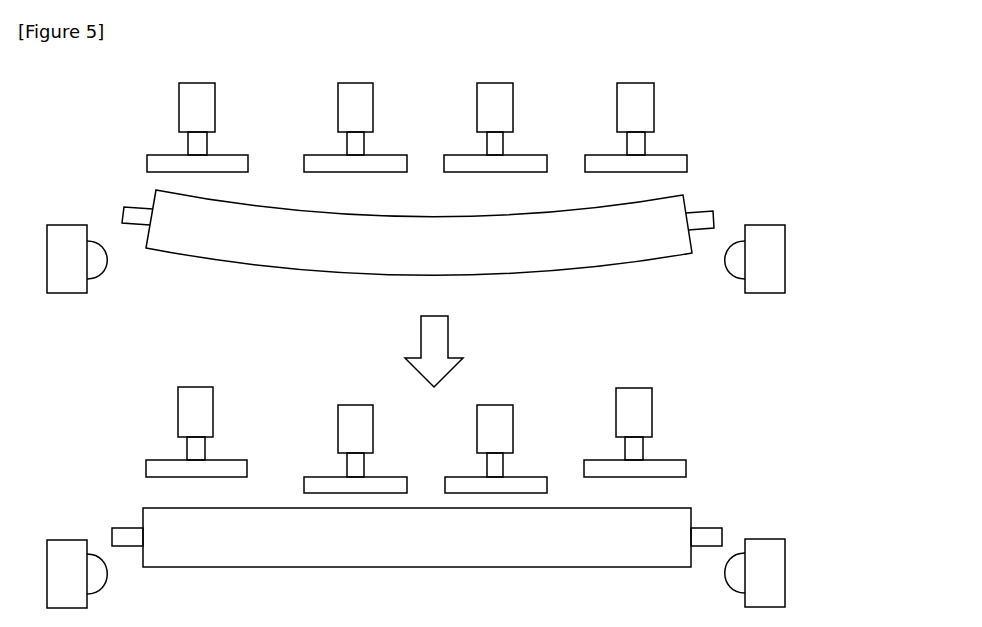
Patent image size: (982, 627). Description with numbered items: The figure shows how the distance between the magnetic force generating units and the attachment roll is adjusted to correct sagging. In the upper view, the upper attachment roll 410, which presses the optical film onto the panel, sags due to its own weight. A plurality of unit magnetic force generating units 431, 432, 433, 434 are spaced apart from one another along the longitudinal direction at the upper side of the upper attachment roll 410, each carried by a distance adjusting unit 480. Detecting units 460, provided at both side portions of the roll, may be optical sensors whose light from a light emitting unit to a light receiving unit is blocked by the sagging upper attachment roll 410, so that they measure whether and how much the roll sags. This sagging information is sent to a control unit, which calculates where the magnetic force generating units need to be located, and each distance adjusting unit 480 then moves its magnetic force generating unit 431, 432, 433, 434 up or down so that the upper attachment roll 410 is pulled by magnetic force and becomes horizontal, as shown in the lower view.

The upper attachment roll 410 is at (675, 212).
The magnetic force generating unit 431 is at (216, 168).
The magnetic force generating unit 432 is at (375, 168).
The magnetic force generating unit 433 is at (515, 168).
The magnetic force generating unit 434 is at (655, 168).
The detecting unit 460 is at (778, 272).
The distance adjusting unit 480 is at (207, 105).